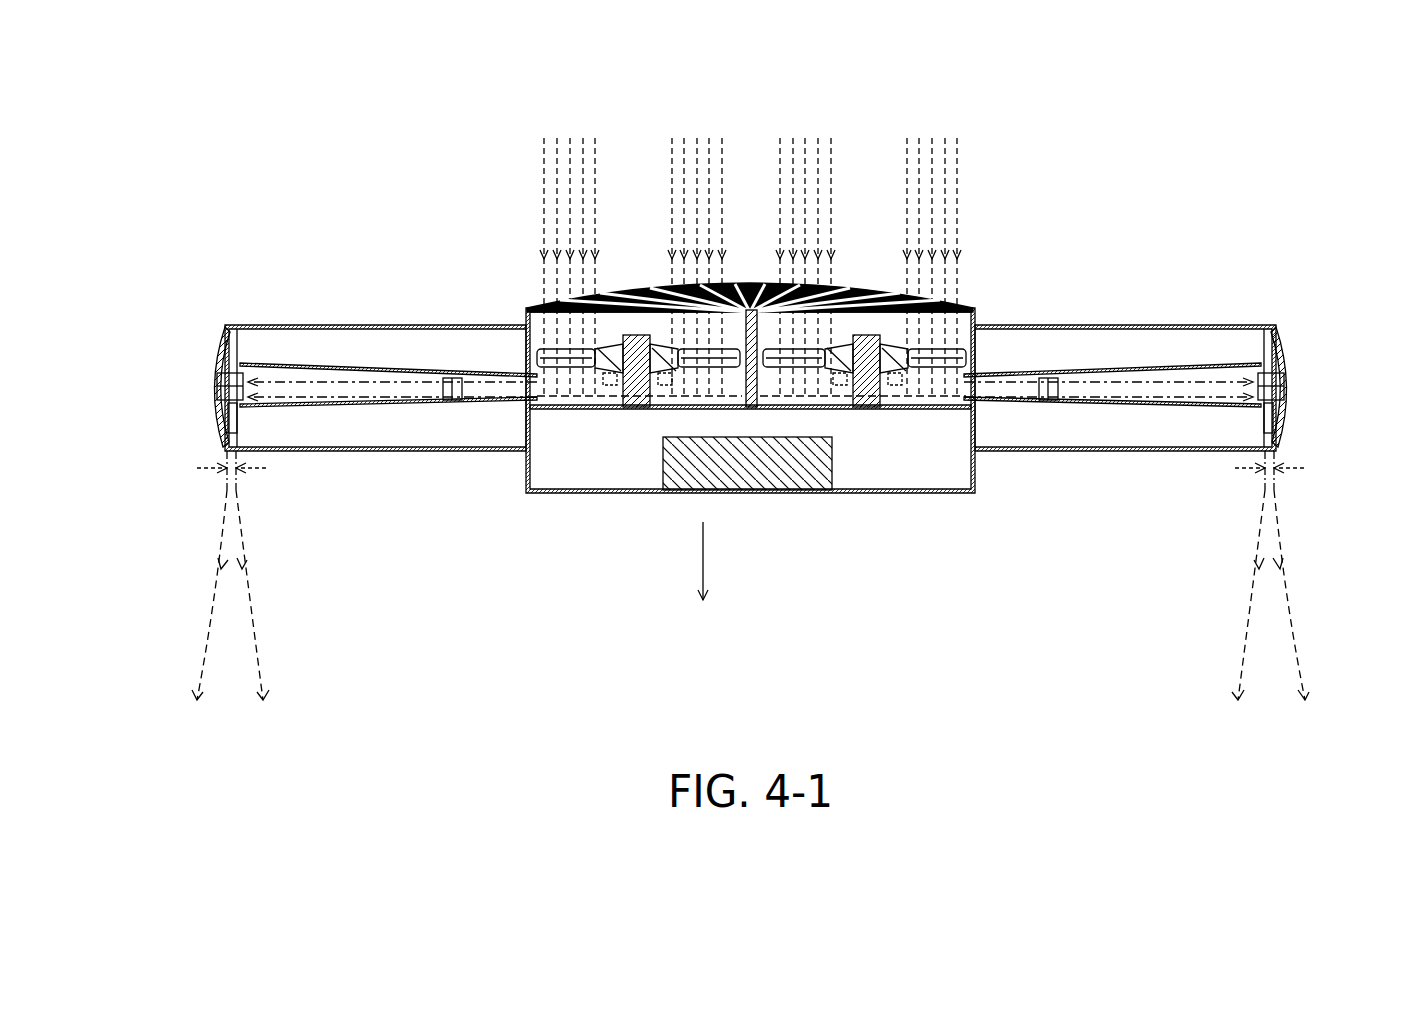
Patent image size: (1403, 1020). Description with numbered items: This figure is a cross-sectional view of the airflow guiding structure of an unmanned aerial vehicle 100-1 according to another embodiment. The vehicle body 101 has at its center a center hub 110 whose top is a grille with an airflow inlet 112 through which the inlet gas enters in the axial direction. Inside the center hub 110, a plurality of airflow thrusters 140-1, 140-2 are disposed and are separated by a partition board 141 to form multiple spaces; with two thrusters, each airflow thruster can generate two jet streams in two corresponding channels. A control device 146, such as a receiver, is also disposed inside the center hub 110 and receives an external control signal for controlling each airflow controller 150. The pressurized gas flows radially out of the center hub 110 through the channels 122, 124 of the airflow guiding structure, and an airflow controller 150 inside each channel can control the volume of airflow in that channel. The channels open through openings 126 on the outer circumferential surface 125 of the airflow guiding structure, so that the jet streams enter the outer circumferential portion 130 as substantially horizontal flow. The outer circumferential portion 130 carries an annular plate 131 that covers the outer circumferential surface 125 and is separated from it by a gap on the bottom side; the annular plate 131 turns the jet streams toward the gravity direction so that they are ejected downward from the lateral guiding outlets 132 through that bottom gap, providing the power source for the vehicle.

The unmanned aerial vehicle 100-1 is at (222, 62).
The vehicle body 101 is at (267, 173).
The center hub 110 is at (529, 492).
The airflow inlet 112 is at (933, 303).
The channel 122 is at (1125, 372).
The channel 124 is at (385, 366).
The outer circumferential surface 125 is at (238, 347).
The opening 126 is at (233, 373).
The outer circumferential portion 130 is at (717, 331).
The annular plate 131 is at (217, 333).
The lateral guiding outlet 132 is at (247, 480).
The airflow thruster 140-1 is at (638, 503).
The airflow thruster 140-2 is at (864, 473).
The partition board 141 is at (750, 310).
The control device 146 is at (755, 478).
The airflow controller 150 is at (450, 400).